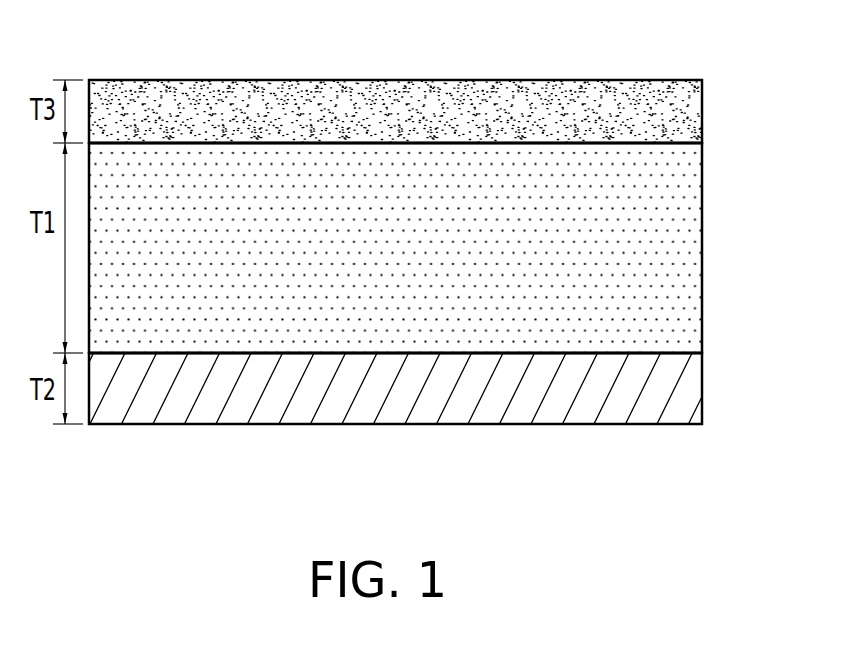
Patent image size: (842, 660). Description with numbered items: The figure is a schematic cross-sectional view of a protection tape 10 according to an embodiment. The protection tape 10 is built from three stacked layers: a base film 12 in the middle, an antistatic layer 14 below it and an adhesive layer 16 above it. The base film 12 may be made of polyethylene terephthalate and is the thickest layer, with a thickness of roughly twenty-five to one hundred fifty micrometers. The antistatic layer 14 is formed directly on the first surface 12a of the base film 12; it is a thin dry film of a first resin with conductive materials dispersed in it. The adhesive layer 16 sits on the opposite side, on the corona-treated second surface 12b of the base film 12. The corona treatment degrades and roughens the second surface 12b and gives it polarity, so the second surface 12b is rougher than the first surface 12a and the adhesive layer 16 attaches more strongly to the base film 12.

The protection tape 10 is at (749, 93).
The base film 12 is at (693, 257).
The first surface 12a is at (192, 363).
The second surface 12b is at (192, 134).
The antistatic layer 14 is at (693, 388).
The adhesive layer 16 is at (695, 112).